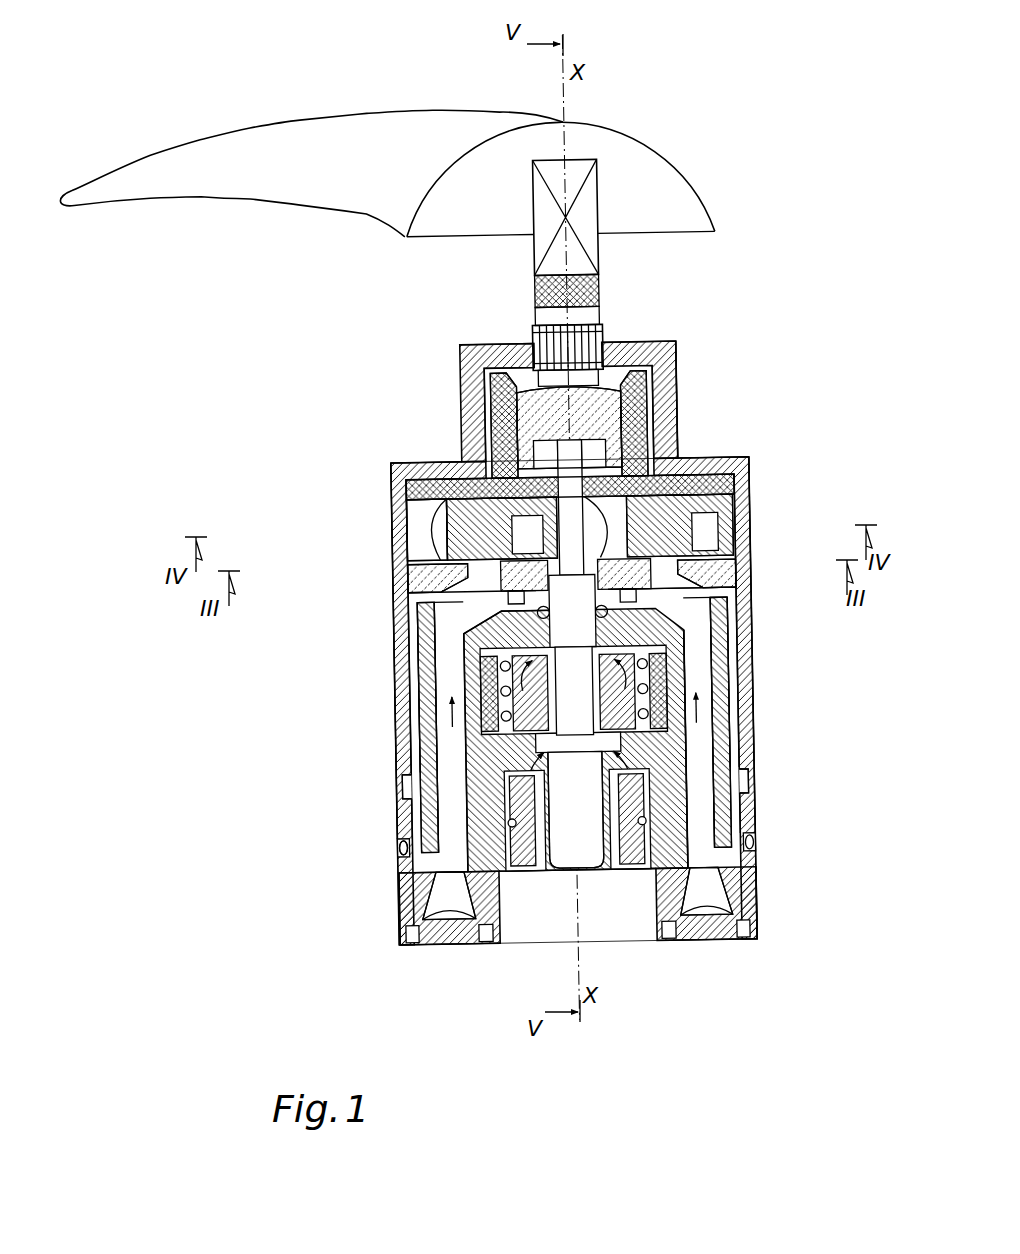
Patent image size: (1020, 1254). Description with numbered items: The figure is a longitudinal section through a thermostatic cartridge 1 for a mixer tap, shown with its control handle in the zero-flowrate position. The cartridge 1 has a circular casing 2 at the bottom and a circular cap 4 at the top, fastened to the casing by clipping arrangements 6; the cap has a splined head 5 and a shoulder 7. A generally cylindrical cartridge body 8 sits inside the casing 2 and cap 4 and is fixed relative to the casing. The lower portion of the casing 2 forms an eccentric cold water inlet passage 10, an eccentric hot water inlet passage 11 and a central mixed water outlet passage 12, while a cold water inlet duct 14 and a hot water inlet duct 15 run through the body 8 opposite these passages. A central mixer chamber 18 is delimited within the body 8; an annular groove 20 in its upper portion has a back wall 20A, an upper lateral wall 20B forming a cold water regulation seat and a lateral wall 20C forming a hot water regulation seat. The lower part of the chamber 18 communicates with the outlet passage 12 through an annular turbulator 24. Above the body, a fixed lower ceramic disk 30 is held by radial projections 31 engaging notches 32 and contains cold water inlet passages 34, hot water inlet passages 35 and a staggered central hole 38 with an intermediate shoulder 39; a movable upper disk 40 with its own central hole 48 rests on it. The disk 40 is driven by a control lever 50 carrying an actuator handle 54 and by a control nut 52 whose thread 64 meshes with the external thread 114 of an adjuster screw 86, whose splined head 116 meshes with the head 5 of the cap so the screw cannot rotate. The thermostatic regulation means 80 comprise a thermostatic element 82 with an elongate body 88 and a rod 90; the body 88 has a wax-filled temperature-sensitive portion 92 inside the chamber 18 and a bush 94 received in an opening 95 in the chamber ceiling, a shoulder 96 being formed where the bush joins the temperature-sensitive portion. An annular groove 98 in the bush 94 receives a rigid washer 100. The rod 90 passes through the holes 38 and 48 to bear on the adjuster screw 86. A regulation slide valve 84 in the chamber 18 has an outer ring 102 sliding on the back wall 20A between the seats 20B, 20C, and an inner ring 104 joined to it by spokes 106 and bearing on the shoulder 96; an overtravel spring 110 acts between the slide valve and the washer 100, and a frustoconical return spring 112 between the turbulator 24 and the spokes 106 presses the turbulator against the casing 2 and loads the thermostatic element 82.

The thermostatic cartridge 1 is at (258, 826).
The circular casing 2 is at (400, 906).
The circular cap 4 is at (398, 497).
The head of the cap 5 is at (605, 322).
The clipping arrangements 6 is at (405, 783).
The shoulder of the cap 7 is at (732, 460).
The cartridge body 8 is at (398, 706).
The cold water inlet passage 10 is at (445, 935).
The hot water inlet passage 11 is at (712, 926).
The mixed water outlet passage 12 is at (550, 875).
The cold water inlet duct 14 is at (400, 828).
The hot water inlet duct 15 is at (702, 822).
The central mixer chamber 18 is at (736, 736).
The annular groove 20 is at (400, 650).
The back wall of the groove 20A is at (405, 680).
The upper lateral wall of the groove 20B is at (420, 620).
The lateral wall of the groove 20C is at (412, 736).
The annular turbulence generator member 24 is at (615, 872).
The lower disk 30 is at (422, 545).
The radial projections 31 is at (745, 566).
The notches 32 is at (735, 525).
The cold water inlet passages 34 is at (415, 575).
The hot water inlet passages 35 is at (736, 500).
The central axial hole 38 is at (716, 470).
The intermediate shoulder 39 is at (498, 405).
The upper disk 40 is at (468, 452).
The central axial hole 48 is at (705, 440).
The control lever 50 is at (607, 205).
The control nut 52 is at (457, 470).
The actuator handle 54 is at (153, 176).
The thread in the control nut 64 is at (465, 443).
The thermostatic regulation means 80 is at (742, 622).
The thermostatic element 82 is at (718, 702).
The regulation slide valve 84 is at (720, 642).
The adjuster screw 86 is at (625, 340).
The elongate body 88 is at (745, 760).
The rod 90 is at (690, 470).
The temperature-sensitive portion 92 is at (590, 855).
The bush 94 is at (392, 457).
The opening 95 is at (572, 611).
The shoulder 96 is at (580, 872).
The annular groove 98 is at (574, 691).
The rigid washer 100 is at (730, 592).
The outer ring 102 is at (732, 670).
The inner ring 104 is at (404, 798).
The spokes 106 is at (400, 700).
The cylindrical spring 110 is at (405, 598).
The frustoconical return spring 112 is at (402, 870).
The external thread 114 is at (660, 360).
The head 116 is at (530, 330).